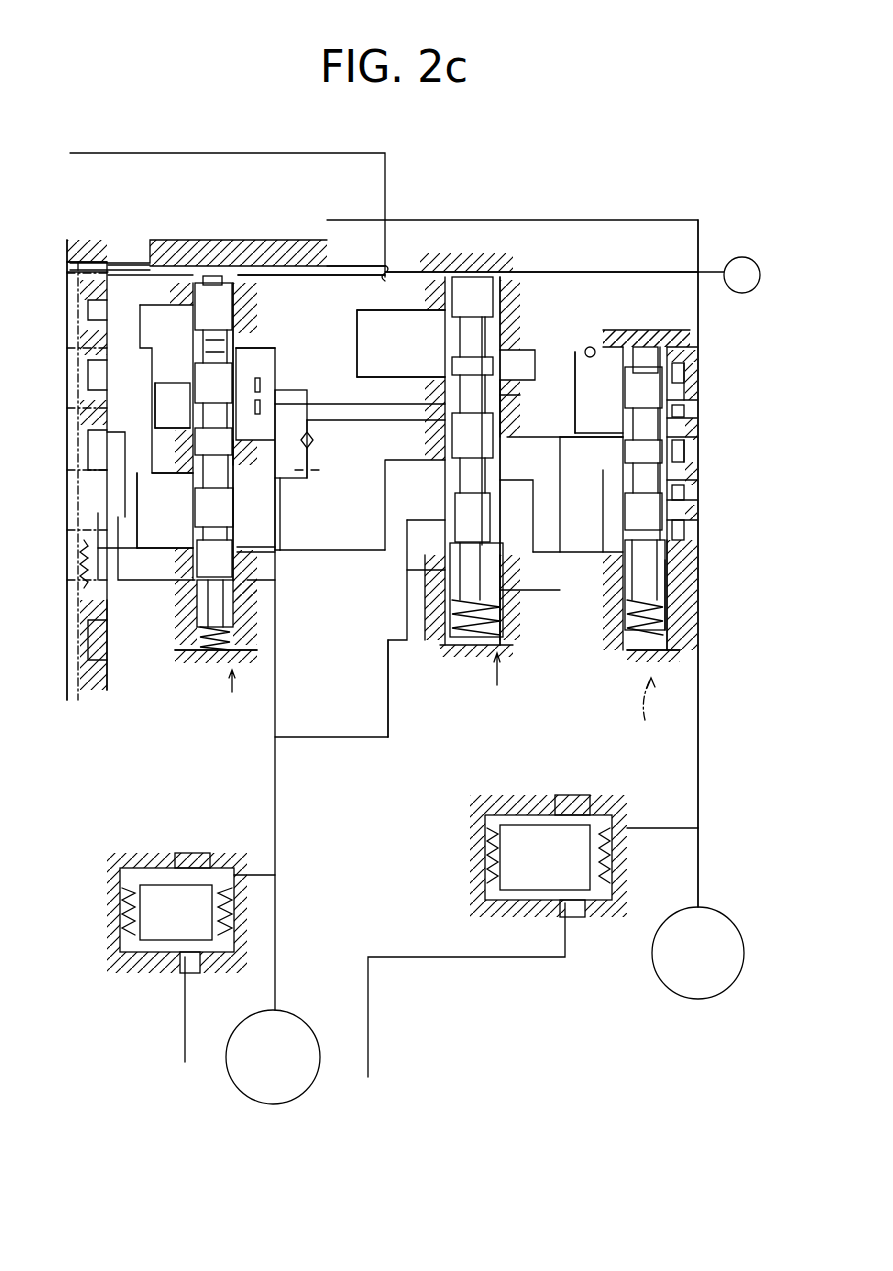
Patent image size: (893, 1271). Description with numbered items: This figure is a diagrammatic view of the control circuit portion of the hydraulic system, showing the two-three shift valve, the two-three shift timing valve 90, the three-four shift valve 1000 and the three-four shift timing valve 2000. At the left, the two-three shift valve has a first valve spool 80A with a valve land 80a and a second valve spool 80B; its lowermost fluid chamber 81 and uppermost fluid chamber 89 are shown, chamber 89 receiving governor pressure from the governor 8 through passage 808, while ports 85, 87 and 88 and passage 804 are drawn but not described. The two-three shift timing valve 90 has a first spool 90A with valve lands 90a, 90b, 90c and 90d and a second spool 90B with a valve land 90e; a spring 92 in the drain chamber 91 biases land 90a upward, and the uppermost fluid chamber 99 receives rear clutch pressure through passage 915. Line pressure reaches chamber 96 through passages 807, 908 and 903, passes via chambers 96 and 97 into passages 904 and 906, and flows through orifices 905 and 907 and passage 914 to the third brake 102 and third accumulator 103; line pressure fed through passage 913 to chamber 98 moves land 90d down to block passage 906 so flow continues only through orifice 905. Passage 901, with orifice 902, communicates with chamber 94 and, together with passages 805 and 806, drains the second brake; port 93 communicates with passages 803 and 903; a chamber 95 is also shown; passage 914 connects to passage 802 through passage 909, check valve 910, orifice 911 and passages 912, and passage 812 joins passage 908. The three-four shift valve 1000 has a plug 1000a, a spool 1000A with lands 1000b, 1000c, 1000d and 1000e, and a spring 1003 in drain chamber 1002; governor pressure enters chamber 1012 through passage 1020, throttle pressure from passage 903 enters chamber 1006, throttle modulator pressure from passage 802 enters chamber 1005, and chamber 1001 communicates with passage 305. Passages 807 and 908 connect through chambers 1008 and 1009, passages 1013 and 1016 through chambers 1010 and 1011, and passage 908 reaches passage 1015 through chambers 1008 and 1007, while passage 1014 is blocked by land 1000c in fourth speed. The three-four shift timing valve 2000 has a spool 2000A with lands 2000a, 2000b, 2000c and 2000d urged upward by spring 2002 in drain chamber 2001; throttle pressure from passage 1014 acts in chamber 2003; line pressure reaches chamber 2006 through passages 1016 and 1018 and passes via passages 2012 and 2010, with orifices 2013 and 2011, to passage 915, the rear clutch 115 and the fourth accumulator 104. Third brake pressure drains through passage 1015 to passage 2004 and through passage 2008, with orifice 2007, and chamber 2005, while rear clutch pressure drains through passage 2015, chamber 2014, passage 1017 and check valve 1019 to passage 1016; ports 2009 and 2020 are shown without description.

The governor 8 is at (742, 258).
The lowermost fluid chamber 81 is at (95, 690).
The passage 85 is at (108, 432).
The port 87 is at (110, 380).
The port 88 is at (110, 345).
The uppermost fluid chamber 89 is at (96, 262).
The first valve spool 80A is at (112, 628).
The second valve spool 80B is at (95, 395).
The valve land 80a is at (120, 660).
The 2-3 shift timing valve 90 is at (242, 716).
The first spool 90A is at (255, 622).
The second spool 90B is at (226, 300).
The valve land 90a is at (258, 580).
The valve land 90b is at (258, 530).
The valve land 90c is at (258, 470).
The valve land 90d is at (240, 375).
The valve land 90e is at (236, 298).
The drain chamber 91 is at (245, 652).
The spring 92 is at (203, 650).
The port 93 is at (258, 547).
The chamber 94 is at (197, 600).
The port 95 is at (258, 500).
The chamber 96 is at (188, 420).
The chamber 97 is at (185, 400).
The chamber 98 is at (238, 330).
The uppermost fluid chamber 99 is at (213, 278).
The third brake 102 is at (318, 985).
The third accumulator 103 is at (148, 843).
The fourth accumulator 104 is at (594, 787).
The rear clutch 115 is at (728, 878).
The passage 305 is at (322, 737).
The passage 802 is at (108, 612).
The passage 803 is at (112, 590).
The passage 804 is at (193, 473).
The passage 805 is at (108, 565).
The passage 806 is at (180, 480).
The passage 807 is at (172, 330).
The passage 808 is at (137, 265).
The passage 812 is at (175, 383).
The passage 901 is at (150, 500).
The orifice 902 is at (120, 550).
The passage 903 is at (195, 442).
The passage 904 is at (260, 385).
The orifice 905 is at (312, 440).
The passage 906 is at (300, 412).
The orifice 907 is at (307, 392).
The passage 908 is at (370, 404).
The passage 909 is at (330, 445).
The check valve 910 is at (312, 450).
The orifice 911 is at (320, 470).
The passages 912 is at (320, 495).
The passage 913 is at (280, 355).
The passage 914 is at (277, 640).
The passage 915 is at (290, 270).
The 3-4 shift valve 1000 is at (523, 706).
The spool 1000A is at (485, 590).
The plug 1000a is at (505, 630).
The valve land 1000b is at (505, 560).
The valve land 1000c is at (600, 552).
The valve land 1000d is at (500, 360).
The valve land 1000e is at (512, 290).
The fluid chamber 1001 is at (440, 648).
The drain chamber 1002 is at (407, 570).
The spring 1003 is at (440, 625).
The fluid chamber 1005 is at (440, 522).
The fluid chamber 1006 is at (425, 462).
The fluid chamber 1007 is at (510, 437).
The fluid chamber 1008 is at (505, 405).
The fluid chamber 1009 is at (505, 390).
The fluid chamber 1010 is at (500, 325).
The fluid chamber 1011 is at (425, 325).
The fluid chamber 1012 is at (455, 270).
The passage 1013 is at (360, 318).
The passage 1014 is at (535, 510).
The passage 1015 is at (600, 490).
The passage 1016 is at (530, 350).
The passage 1017 is at (592, 347).
The passage 1018 is at (580, 425).
The check valve 1019 is at (578, 420).
The passage 1020 is at (558, 265).
The 3-4 shift timing valve 2000 is at (690, 749).
The spool 2000A is at (658, 600).
The valve land 2000a is at (665, 590).
The valve land 2000b is at (668, 560).
The valve land 2000c is at (690, 455).
The valve land 2000d is at (690, 368).
The drain chamber 2001 is at (680, 650).
The spring 2002 is at (627, 650).
The fluid chamber 2003 is at (612, 600).
The passage 2004 is at (685, 540).
The chamber 2005 is at (620, 528).
The fluid chamber 2006 is at (610, 445).
The orifice 2007 is at (690, 505).
The passage 2008 is at (690, 490).
The port 2009 is at (690, 475).
The passage 2010 is at (686, 437).
The orifice 2011 is at (686, 418).
The passage 2012 is at (690, 400).
The orifice 2013 is at (690, 385).
The chamber 2014 is at (646, 328).
The passage 2015 is at (695, 347).
The port 2020 is at (690, 520).